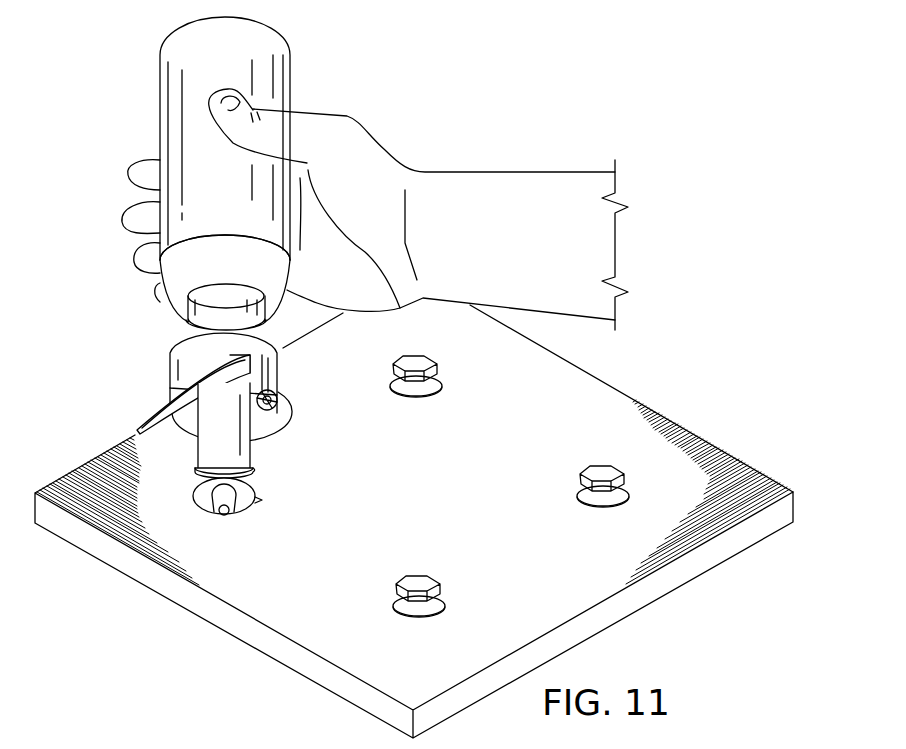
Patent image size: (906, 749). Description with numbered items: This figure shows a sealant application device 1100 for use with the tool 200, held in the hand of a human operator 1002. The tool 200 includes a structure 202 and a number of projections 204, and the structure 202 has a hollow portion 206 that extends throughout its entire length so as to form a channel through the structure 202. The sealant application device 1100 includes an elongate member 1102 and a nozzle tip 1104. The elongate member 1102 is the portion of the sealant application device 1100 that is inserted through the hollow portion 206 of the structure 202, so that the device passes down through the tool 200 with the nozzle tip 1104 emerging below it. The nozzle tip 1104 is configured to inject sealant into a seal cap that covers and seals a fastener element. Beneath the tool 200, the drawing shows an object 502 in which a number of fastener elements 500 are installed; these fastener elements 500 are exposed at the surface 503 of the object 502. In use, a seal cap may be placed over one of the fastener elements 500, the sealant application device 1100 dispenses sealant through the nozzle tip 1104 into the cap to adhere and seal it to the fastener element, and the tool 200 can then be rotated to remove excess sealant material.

The sealant application device 1100 is at (199, 74).
The human operator 1002 is at (378, 145).
The tool 200 is at (228, 452).
The structure 202 is at (273, 372).
The number of projections 204 is at (314, 414).
The hollow portion 206 is at (265, 432).
The elongate member 1102 is at (197, 455).
The nozzle tip 1104 is at (226, 520).
The number of fastener elements 500 is at (448, 368).
The object 502 is at (628, 392).
The surface 503 is at (433, 489).